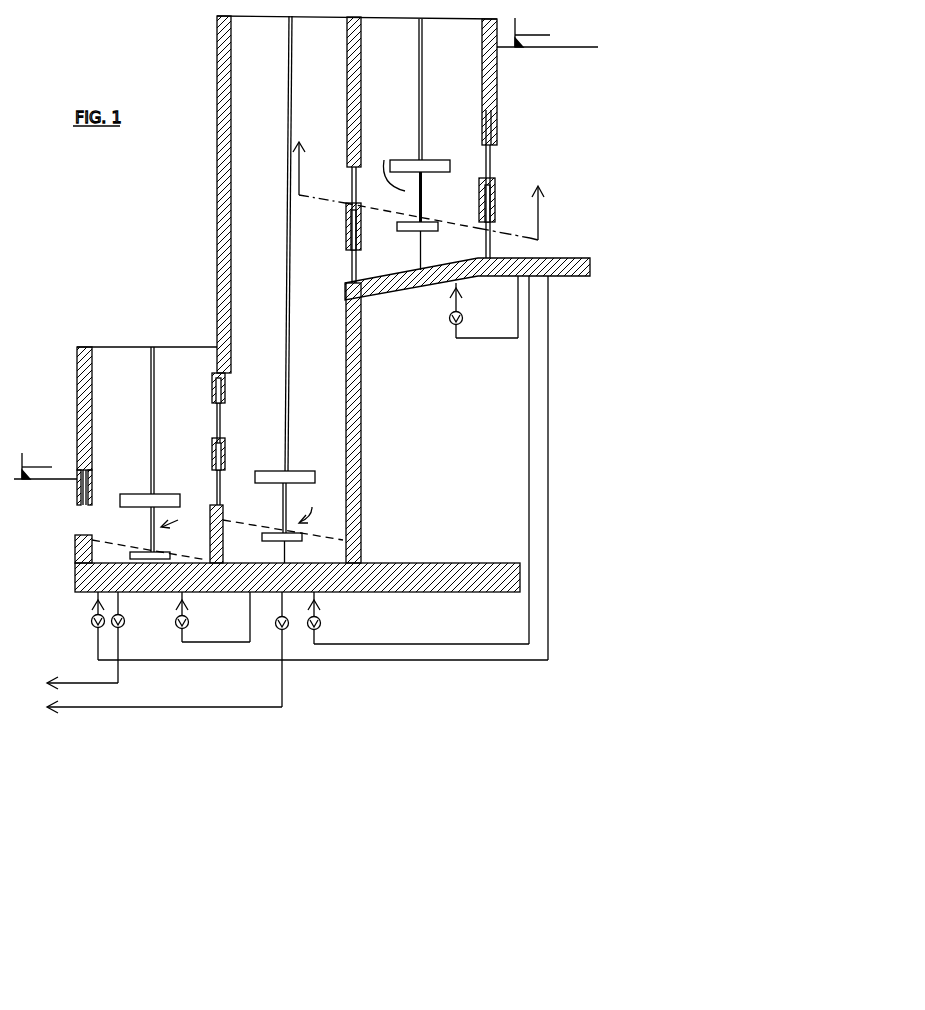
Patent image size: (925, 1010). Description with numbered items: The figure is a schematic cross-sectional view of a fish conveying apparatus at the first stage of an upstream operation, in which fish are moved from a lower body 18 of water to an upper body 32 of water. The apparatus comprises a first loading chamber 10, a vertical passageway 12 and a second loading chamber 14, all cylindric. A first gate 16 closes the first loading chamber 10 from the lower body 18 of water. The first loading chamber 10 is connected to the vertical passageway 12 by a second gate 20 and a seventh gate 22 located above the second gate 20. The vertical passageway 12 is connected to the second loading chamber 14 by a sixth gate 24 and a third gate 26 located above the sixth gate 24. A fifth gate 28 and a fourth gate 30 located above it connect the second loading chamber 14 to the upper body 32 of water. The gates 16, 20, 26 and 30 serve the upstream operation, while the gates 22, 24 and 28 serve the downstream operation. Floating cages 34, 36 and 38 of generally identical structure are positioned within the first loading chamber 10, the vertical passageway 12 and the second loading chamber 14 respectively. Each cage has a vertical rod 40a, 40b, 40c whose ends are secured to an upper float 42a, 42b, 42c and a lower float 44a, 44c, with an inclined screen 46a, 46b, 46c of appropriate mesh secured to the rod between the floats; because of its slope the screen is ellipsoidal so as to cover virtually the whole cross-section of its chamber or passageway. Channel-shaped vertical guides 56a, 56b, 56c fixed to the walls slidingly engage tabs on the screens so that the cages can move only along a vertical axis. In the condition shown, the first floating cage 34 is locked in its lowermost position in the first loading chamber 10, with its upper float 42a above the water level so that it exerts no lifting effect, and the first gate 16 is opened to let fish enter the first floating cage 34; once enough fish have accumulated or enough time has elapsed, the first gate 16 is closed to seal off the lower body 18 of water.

The first loading chamber 10 is at (194, 375).
The vertical passageway 12 is at (331, 50).
The second loading chamber 14 is at (462, 50).
The first gate 16 is at (95, 505).
The lower body of water 18 is at (54, 504).
The second gate 20 is at (221, 486).
The seventh gate 22 is at (222, 421).
The sixth gate 24 is at (358, 283).
The third gate 26 is at (357, 199).
The fifth gate 28 is at (487, 243).
The fourth gate 30 is at (493, 166).
The upper body of water 32 is at (542, 71).
The first floating cage 34 is at (175, 522).
The second floating cage 36 is at (311, 507).
The third floating cage 38 is at (393, 167).
The vertical rod of first cage 40a is at (148, 532).
The vertical rod of second cage 40b is at (281, 513).
The vertical rod of third cage 40c is at (423, 197).
The upper float of first cage 42a is at (167, 493).
The upper float of second cage 42b is at (300, 471).
The upper float of third cage 42c is at (440, 160).
The lower float of first cage 44a is at (272, 536).
The lower float of third cage 44c is at (397, 226).
The inclined screen of first cage 46a is at (183, 557).
The inclined screen of second cage 46b is at (304, 534).
The inclined screen of third cage 46c is at (451, 216).
The vertical guide of first chamber 56a is at (156, 437).
The vertical guide of passageway 56b is at (293, 78).
The vertical guide of second chamber 56c is at (423, 78).